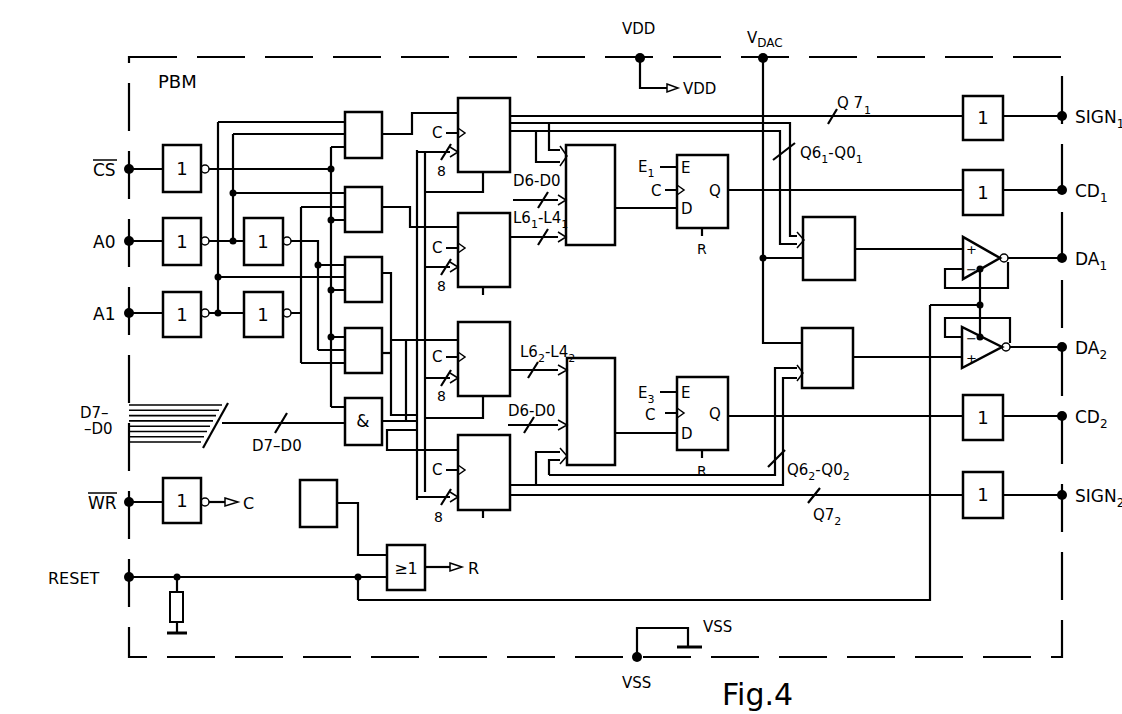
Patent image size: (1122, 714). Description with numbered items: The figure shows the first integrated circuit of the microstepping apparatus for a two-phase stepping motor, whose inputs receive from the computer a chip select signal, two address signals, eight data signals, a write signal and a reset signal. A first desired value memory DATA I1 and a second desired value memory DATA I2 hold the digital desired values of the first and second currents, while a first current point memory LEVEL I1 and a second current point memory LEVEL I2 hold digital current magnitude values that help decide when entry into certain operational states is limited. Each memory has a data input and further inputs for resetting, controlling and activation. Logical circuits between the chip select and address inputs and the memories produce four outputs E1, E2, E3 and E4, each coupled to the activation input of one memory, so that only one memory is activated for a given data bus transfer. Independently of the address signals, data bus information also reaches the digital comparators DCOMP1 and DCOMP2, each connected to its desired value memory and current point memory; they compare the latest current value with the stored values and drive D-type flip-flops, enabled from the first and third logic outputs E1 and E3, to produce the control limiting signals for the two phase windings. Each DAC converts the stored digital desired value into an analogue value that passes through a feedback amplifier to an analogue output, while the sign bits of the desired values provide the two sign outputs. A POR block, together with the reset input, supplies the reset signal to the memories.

The logic output E1 is at (401, 135).
The logic output E2 is at (401, 209).
The logic output E3 is at (401, 339).
The logic output E4 is at (376, 351).
The first desired value memory DATA I1 is at (488, 112).
The first current point memory LEVEL I1 is at (492, 258).
The second current point memory LEVEL I2 is at (488, 357).
The second desired value memory DATA I2 is at (486, 488).
The digital comparator DCOMP1 is at (596, 207).
The digital comparator DCOMP2 is at (640, 358).
The digital to analogue converter DAC is at (828, 302).
The power-on reset POR is at (322, 510).